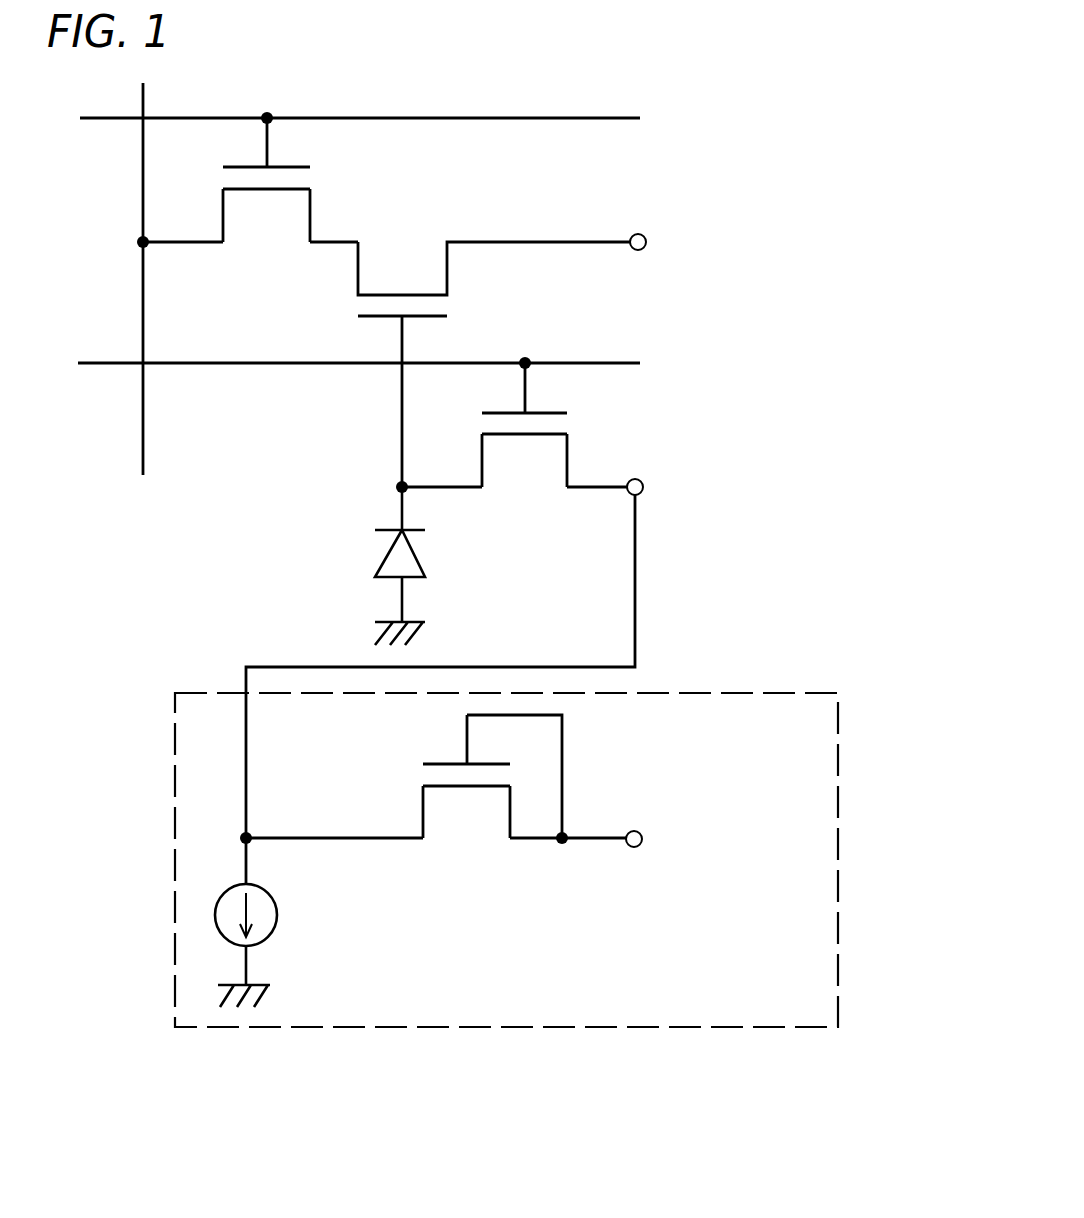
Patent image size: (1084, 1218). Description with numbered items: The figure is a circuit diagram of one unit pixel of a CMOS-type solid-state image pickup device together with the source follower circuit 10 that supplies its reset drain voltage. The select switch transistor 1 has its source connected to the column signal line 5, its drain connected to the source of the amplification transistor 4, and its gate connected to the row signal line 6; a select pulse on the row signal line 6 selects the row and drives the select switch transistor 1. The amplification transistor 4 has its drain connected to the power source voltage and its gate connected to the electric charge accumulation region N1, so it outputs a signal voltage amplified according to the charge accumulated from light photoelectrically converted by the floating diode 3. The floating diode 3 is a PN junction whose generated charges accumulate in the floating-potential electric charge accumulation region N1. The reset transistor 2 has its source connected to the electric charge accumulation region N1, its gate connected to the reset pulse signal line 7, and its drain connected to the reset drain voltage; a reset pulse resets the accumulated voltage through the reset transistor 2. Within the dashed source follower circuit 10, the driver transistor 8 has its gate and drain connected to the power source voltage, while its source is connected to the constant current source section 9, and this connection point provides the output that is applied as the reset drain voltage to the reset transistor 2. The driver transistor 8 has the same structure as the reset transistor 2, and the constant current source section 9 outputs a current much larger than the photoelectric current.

The select switch transistor 1 is at (310, 179).
The reset transistor 2 is at (570, 423).
The floating diode 3 is at (385, 555).
The amplification transistor 4 is at (352, 304).
The column signal line 5 is at (143, 437).
The row signal line 6 is at (533, 118).
The reset pulse signal line 7 is at (592, 363).
The driver transistor 8 is at (415, 775).
The constant current source section 9 is at (278, 915).
The source follower circuit 10 is at (478, 1027).
The electric charge accumulation region N1 is at (395, 486).